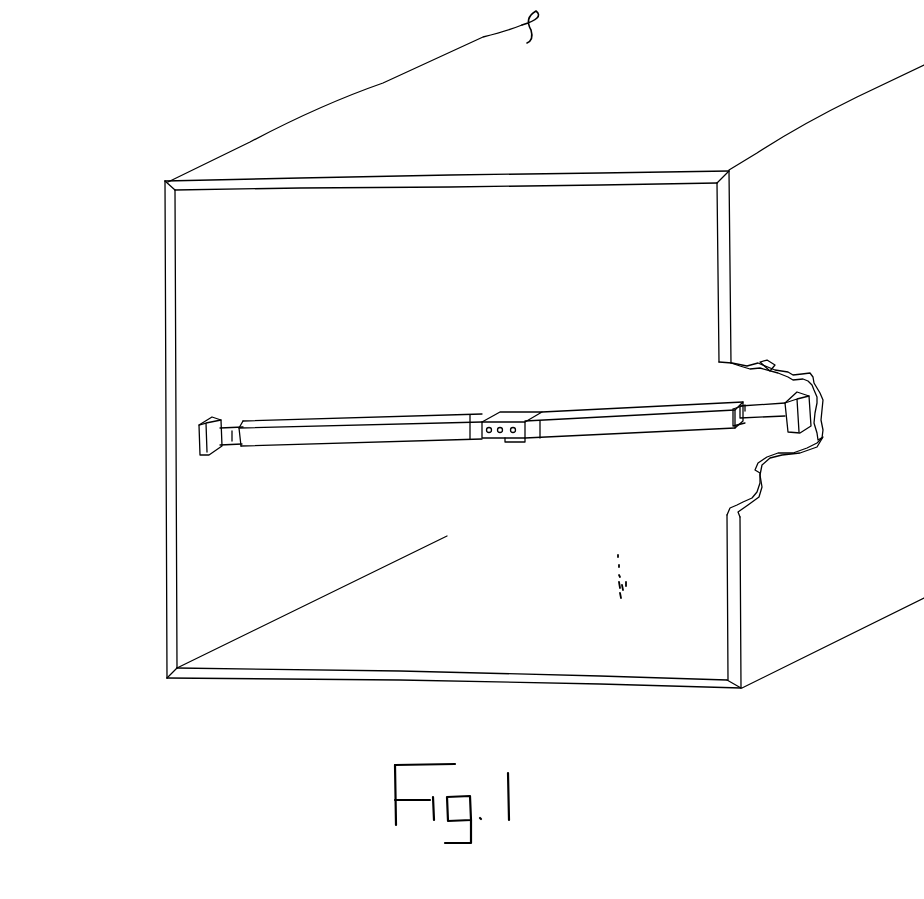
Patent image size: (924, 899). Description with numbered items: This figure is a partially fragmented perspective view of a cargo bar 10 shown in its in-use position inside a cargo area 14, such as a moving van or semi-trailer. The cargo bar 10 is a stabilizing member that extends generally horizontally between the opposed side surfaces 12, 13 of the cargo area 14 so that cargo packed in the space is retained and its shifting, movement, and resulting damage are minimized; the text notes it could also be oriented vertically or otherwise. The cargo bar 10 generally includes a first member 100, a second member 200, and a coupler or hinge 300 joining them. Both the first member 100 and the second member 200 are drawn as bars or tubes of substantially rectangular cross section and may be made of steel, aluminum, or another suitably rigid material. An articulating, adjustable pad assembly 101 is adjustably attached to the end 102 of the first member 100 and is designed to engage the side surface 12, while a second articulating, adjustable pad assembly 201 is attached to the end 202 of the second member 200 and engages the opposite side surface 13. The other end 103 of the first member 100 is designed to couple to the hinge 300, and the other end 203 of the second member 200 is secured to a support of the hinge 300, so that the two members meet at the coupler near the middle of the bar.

The cargo bar 10 is at (532, 336).
The side surface 12 is at (193, 280).
The side surface 13 is at (718, 258).
The cargo area 14 is at (209, 575).
The first member 100 is at (352, 419).
The articulating, adjustable pad assembly 101 is at (233, 418).
The end of first member 102 is at (253, 440).
The other end of first member 103 is at (473, 433).
The second member 200 is at (619, 406).
The second articulating, adjustable pad assembly 201 is at (770, 392).
The end of second member 202 is at (717, 420).
The other end of second member 203 is at (546, 432).
The coupler or hinge 300 is at (497, 444).